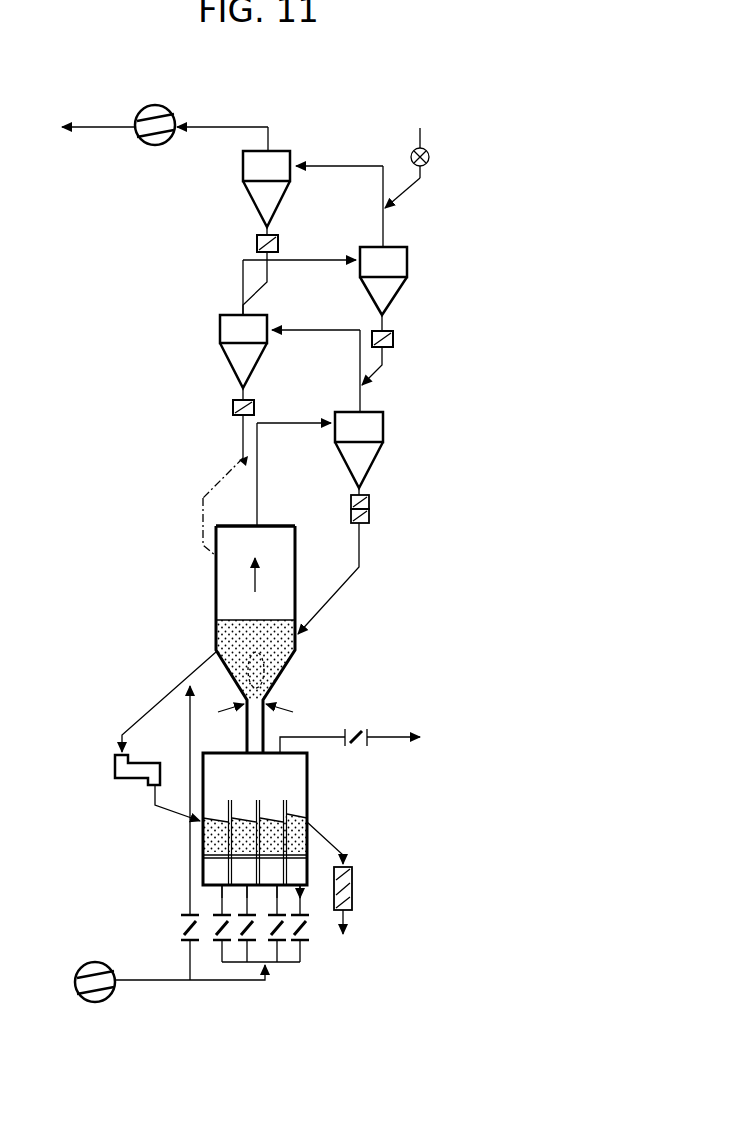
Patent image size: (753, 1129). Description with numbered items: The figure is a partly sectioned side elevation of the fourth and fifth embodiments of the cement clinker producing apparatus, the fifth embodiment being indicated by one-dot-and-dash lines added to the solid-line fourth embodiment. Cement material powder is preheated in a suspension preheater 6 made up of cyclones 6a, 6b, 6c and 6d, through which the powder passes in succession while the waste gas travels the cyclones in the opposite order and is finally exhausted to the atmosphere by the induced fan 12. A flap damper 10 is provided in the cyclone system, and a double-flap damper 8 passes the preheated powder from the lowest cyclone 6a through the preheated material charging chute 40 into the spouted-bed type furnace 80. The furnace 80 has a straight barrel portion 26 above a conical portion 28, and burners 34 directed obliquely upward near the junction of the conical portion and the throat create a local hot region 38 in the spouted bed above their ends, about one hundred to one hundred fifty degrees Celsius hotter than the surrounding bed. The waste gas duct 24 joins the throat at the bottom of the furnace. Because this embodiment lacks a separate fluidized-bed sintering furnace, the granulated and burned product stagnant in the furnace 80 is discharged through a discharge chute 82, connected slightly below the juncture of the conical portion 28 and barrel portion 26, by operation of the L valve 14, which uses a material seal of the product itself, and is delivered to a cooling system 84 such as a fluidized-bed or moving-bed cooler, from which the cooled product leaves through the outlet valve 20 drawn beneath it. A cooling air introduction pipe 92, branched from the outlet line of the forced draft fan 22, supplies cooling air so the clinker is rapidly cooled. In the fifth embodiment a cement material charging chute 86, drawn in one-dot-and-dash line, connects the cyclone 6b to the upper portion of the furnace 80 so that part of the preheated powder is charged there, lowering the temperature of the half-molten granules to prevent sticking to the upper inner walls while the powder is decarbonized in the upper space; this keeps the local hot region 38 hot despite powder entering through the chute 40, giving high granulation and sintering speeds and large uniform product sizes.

The suspension preheater 6 is at (211, 290).
The cyclone 6a is at (383, 430).
The cyclone 6b is at (220, 331).
The cyclone 6c is at (407, 262).
The cyclone 6d is at (283, 151).
The double-flap damper 8 is at (369, 516).
The flap damper 10 is at (233, 406).
The induced fan 12 is at (158, 146).
The L valve 14 is at (122, 780).
The discharge valve 20 is at (352, 890).
The forced draft fan 22 is at (86, 960).
The waste gas duct 24 is at (265, 727).
The straight barrel portion 26 is at (216, 566).
The conical portion 28 is at (280, 672).
The burners 34 is at (292, 715).
The local hot region 38 is at (290, 665).
The preheated material charging chute 40 is at (340, 587).
The spouted-bed type furnace 80 is at (216, 596).
The discharge chute 82 is at (205, 672).
The cooling system 84 is at (307, 797).
The cement material charging chute 86 is at (203, 495).
The cooling air introduction pipe 92 is at (190, 857).